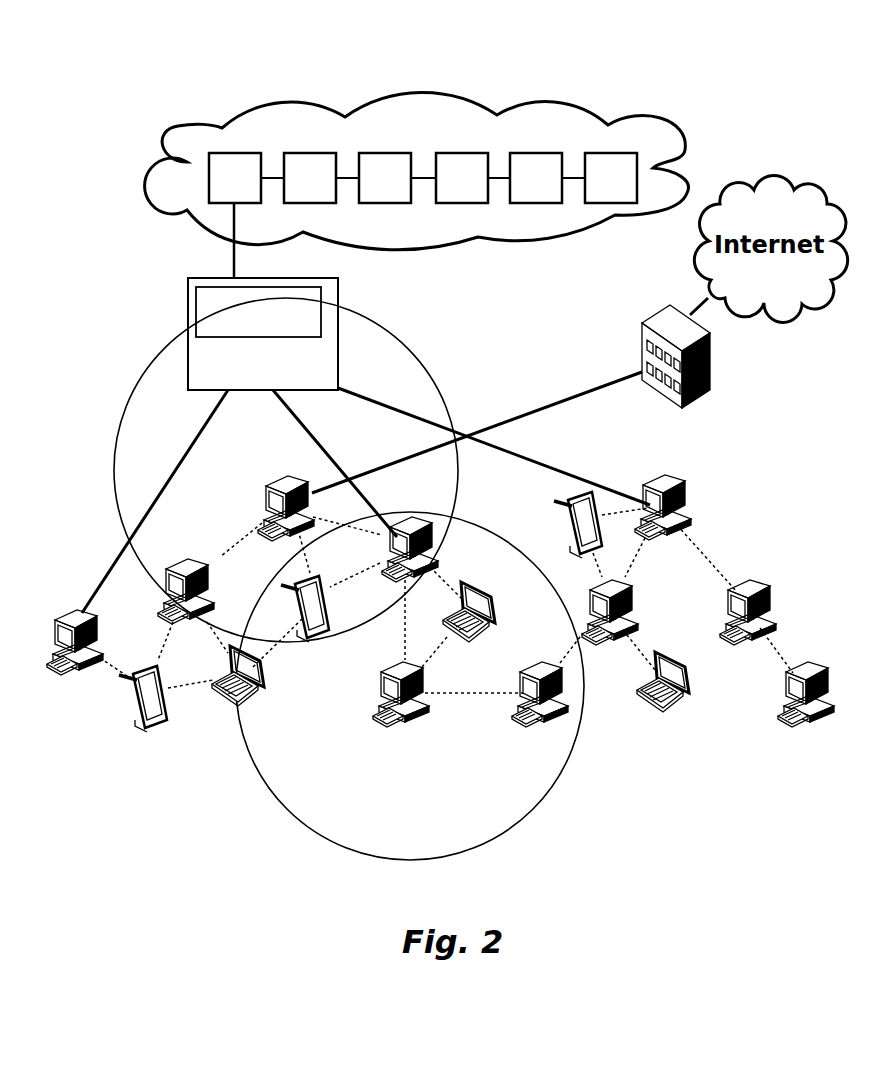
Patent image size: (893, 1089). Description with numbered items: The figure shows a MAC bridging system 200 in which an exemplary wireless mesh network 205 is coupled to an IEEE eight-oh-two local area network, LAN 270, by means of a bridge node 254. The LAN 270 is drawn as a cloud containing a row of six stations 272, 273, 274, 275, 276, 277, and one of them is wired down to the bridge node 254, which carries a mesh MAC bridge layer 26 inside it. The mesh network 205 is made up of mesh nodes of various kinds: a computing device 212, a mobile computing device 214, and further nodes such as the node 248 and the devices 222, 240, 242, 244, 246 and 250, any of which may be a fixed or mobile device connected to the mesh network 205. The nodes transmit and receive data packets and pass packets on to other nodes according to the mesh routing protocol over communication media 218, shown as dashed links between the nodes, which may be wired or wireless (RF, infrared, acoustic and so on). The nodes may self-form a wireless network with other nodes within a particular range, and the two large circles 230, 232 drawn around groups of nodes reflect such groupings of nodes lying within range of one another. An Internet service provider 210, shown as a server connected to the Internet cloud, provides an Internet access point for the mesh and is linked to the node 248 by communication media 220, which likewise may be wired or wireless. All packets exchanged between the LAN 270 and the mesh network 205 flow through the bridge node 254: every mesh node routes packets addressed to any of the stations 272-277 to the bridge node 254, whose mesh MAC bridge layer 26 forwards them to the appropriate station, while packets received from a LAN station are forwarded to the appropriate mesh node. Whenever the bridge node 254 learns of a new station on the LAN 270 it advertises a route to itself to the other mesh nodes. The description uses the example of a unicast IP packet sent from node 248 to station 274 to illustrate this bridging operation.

The MAC bridging system 200 is at (760, 58).
The mesh network 205 is at (455, 327).
The Internet service provider 210 is at (629, 408).
The computing device 212 is at (631, 704).
The mobile computing device 214 is at (139, 726).
The communication media 218 is at (217, 559).
The communication media 220 is at (567, 394).
The mesh node computer 222 is at (101, 619).
The second mesh cluster 230 is at (294, 834).
The first mesh cluster 232 is at (107, 477).
The mesh node computer 240 is at (512, 726).
The mesh node computer 242 is at (386, 726).
The mesh node computer 244 is at (418, 507).
The laptop mesh node 246 is at (485, 579).
The node 248 is at (261, 491).
The PDA mesh node 250 is at (341, 623).
The bridge node 254 is at (181, 288).
The mesh MAC bridge layer 26 is at (282, 283).
The LAN 270 is at (390, 94).
The station 272 is at (246, 215).
The station 273 is at (321, 178).
The station 274 is at (397, 178).
The station 275 is at (473, 178).
The station 276 is at (547, 178).
The station 277 is at (611, 178).